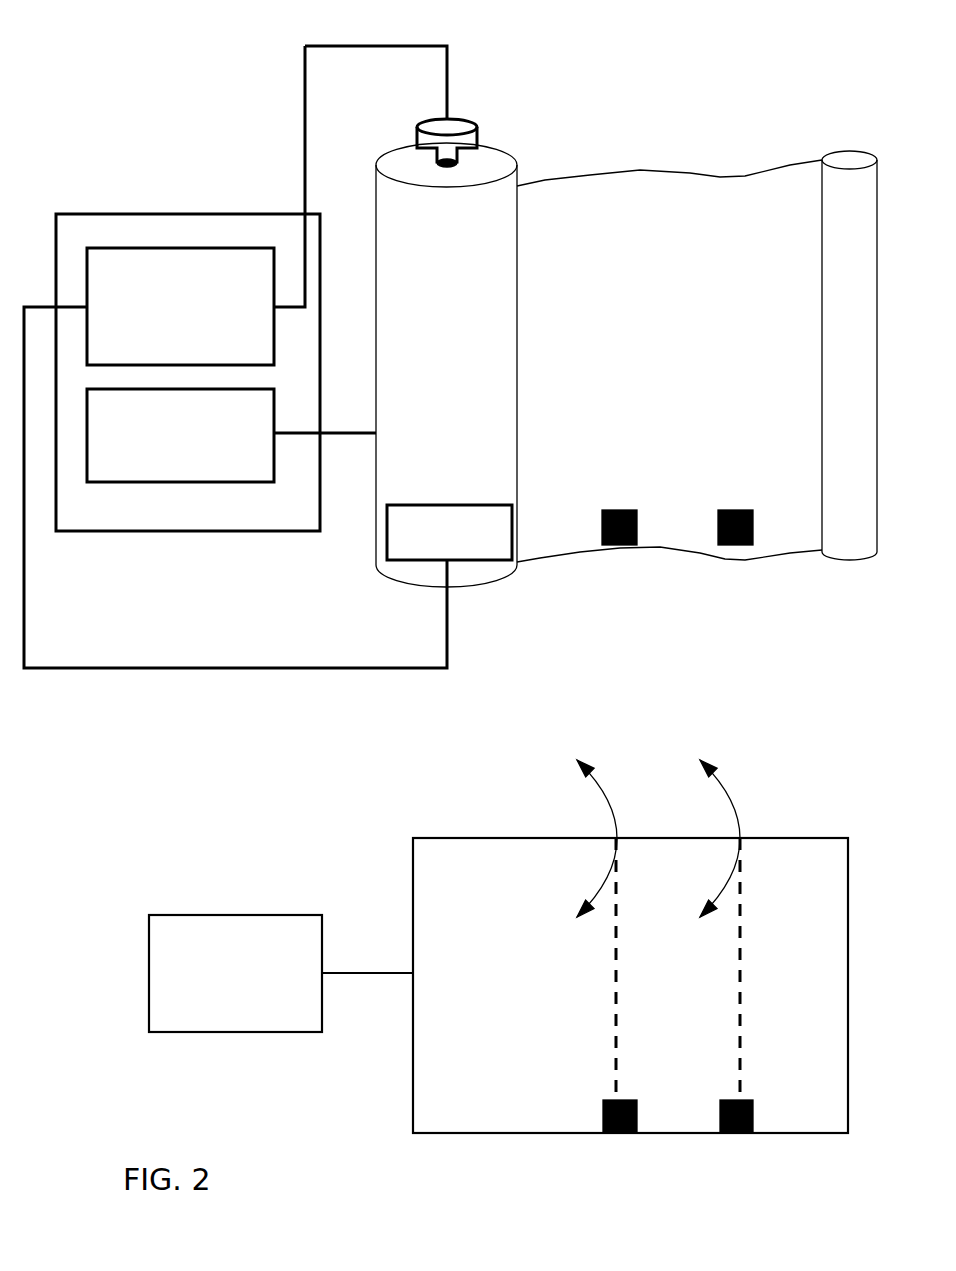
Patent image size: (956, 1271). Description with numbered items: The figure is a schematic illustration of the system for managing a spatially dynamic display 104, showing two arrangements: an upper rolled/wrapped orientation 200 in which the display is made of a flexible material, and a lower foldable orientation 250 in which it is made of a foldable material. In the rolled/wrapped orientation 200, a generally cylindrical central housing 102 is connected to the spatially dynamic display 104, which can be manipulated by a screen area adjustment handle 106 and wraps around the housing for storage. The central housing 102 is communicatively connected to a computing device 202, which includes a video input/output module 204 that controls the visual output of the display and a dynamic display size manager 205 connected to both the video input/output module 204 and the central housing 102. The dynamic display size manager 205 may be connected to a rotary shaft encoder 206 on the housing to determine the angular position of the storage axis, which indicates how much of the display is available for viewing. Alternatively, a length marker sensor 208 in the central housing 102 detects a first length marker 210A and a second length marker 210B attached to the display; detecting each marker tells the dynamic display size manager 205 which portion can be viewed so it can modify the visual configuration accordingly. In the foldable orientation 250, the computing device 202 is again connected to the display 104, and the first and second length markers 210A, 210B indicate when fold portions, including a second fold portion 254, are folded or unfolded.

The rolled/wrapped orientation 200 is at (150, 57).
The computing device 202 is at (190, 213).
The video input/output (I/O) module 204 is at (165, 457).
The dynamic display size manager 205 is at (165, 354).
The rotary shaft encoder 206 is at (477, 129).
The length marker sensor 208 is at (434, 552).
The central housing 102 is at (517, 357).
The spatially dynamic display 104 is at (742, 561).
The screen area adjustment handle 106 is at (848, 147).
The first length marker 210A is at (727, 547).
The second length marker 210B is at (607, 547).
The foldable orientation 250 is at (740, 1003).
The second fold portion 254 is at (617, 1003).